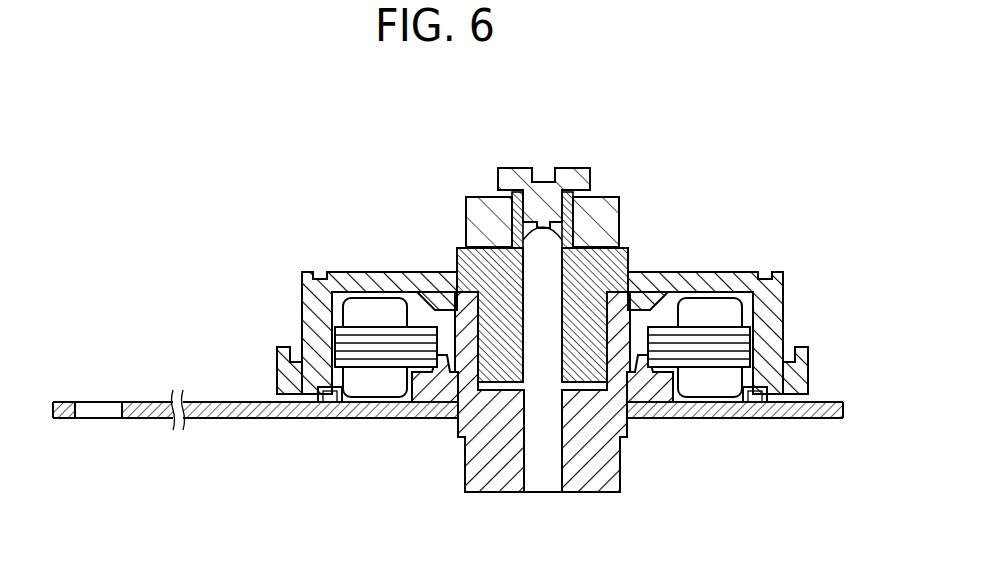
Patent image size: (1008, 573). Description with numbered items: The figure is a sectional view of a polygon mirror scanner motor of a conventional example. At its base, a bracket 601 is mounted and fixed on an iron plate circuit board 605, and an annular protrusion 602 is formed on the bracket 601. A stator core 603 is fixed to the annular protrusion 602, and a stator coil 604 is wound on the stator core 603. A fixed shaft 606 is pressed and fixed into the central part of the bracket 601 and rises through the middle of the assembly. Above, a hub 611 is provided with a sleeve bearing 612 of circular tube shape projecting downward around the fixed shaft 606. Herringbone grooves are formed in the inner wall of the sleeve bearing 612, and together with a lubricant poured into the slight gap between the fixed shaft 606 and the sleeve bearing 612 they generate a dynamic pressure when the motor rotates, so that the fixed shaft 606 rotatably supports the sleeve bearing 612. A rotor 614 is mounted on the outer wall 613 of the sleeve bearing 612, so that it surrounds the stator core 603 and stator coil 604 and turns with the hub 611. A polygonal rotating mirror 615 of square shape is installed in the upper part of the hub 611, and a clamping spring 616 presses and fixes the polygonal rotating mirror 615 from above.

The bracket 601 is at (466, 462).
The annular protrusion 602 is at (650, 418).
The stator core 603 is at (750, 325).
The stator coil 604 is at (723, 307).
The iron plate circuit board 605 is at (327, 402).
The fixed shaft 606 is at (545, 477).
The hub 611 is at (630, 250).
The sleeve bearing 612 is at (457, 250).
The outer wall 613 is at (662, 270).
The rotor 614 is at (359, 270).
The polygonal rotating mirror 615 is at (480, 207).
The clamping spring 616 is at (587, 195).